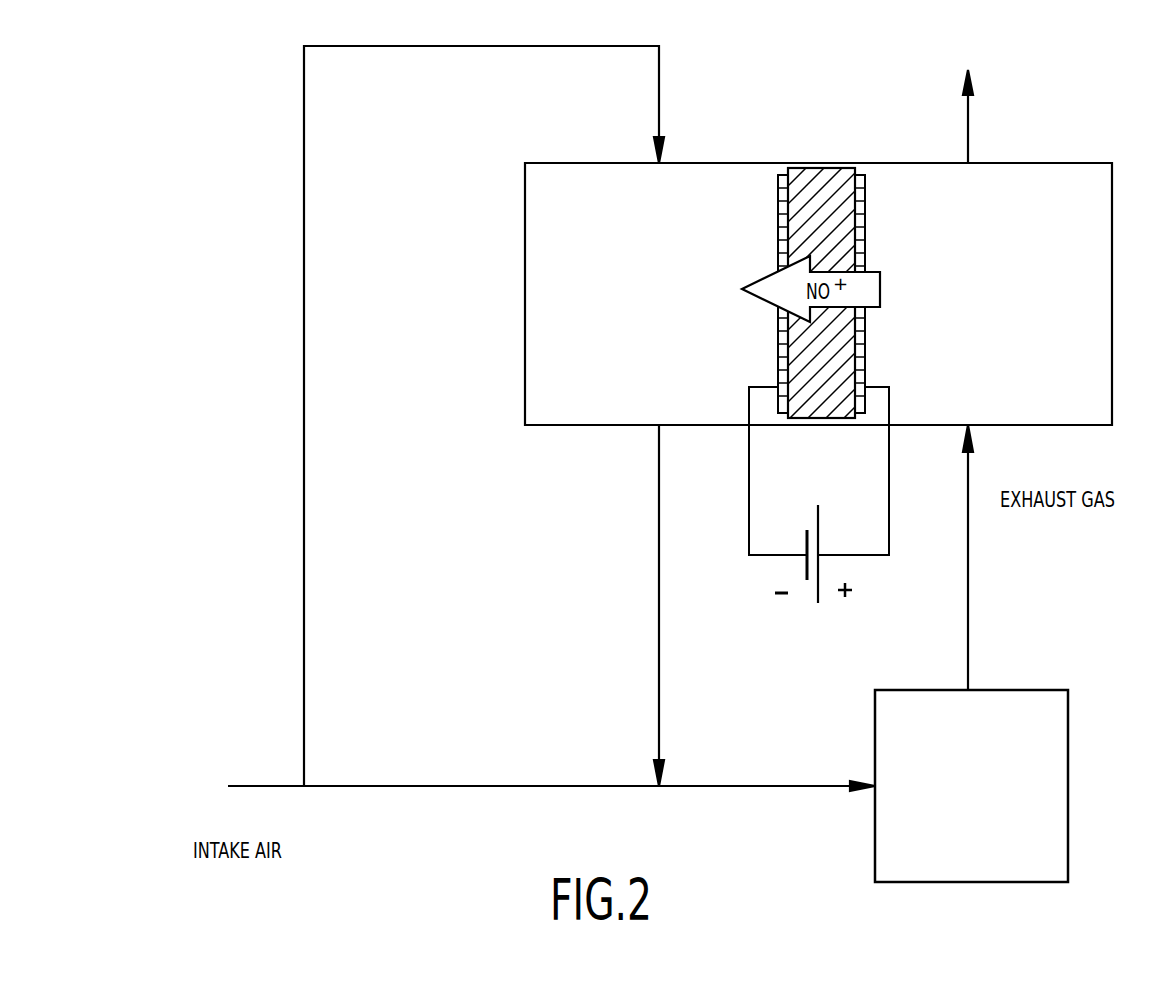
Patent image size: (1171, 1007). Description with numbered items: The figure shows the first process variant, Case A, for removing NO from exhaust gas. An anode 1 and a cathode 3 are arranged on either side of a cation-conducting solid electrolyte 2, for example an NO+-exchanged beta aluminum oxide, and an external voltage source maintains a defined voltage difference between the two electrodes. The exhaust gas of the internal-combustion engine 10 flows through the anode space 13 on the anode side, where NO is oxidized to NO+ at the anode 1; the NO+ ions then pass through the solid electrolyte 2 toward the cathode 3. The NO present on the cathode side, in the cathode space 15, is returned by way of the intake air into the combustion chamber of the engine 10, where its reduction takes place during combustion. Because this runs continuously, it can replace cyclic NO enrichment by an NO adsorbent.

The anode 1 is at (866, 205).
The solid electrolyte 2 is at (843, 180).
The cathode 3 is at (778, 195).
The internal-combustion engine 10 is at (875, 845).
The anode space 13 is at (1078, 299).
The cathode space 15 is at (547, 281).